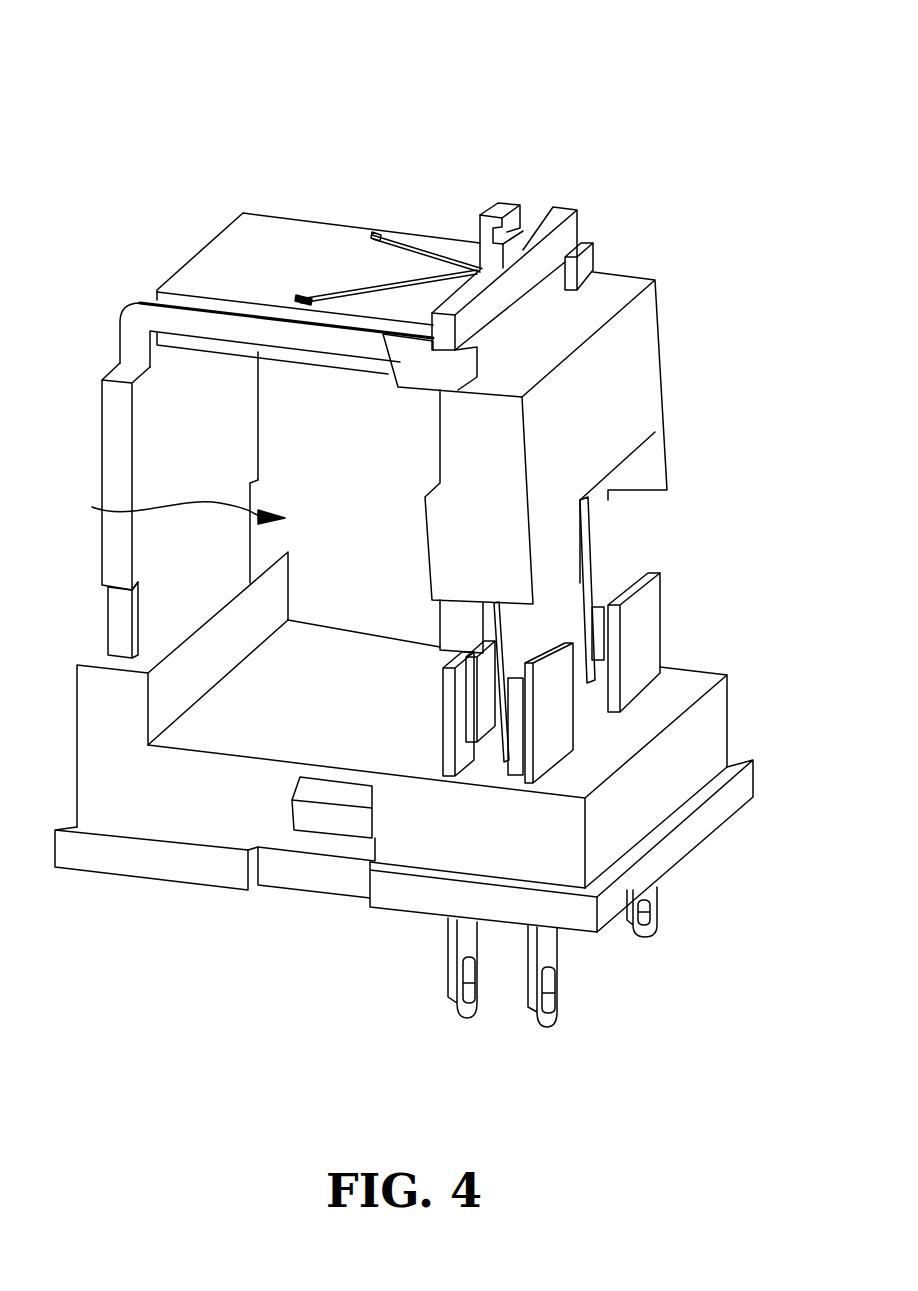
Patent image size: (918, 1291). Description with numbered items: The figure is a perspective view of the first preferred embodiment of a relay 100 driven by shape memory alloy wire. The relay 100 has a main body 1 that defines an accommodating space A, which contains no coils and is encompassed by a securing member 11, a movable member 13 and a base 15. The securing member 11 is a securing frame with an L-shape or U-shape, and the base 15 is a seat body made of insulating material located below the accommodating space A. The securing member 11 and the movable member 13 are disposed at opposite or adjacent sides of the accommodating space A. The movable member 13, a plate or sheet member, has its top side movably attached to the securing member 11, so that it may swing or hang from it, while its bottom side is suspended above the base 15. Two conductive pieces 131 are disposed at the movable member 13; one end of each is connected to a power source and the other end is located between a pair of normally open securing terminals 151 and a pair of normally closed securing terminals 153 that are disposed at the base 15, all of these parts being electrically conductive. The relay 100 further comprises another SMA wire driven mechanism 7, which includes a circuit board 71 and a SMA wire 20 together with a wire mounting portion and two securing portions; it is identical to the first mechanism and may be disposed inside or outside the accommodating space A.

The relay 100 is at (67, 31).
The main body 1 is at (192, 224).
The SMA wire driven mechanism 7 is at (293, 176).
The circuit board 71 is at (300, 257).
The SMA wire 20 is at (422, 248).
The securing member 11 is at (130, 303).
The movable member 13 is at (630, 368).
The conductive pieces 131 is at (588, 535).
The base 15 is at (713, 722).
The normally open securing terminal 151 is at (553, 1013).
The normally closed securing terminal 153 is at (448, 1008).
The accommodating space A is at (177, 508).